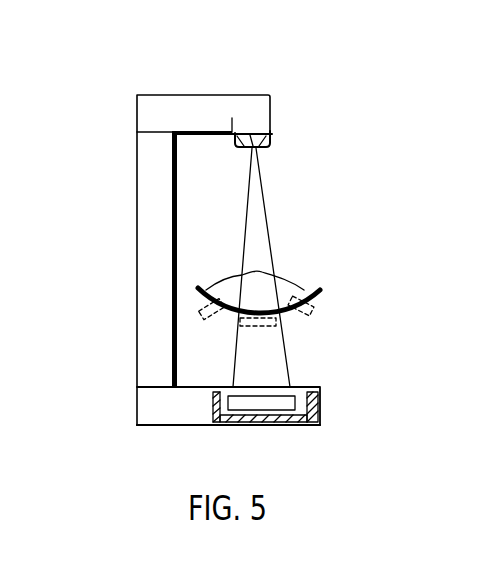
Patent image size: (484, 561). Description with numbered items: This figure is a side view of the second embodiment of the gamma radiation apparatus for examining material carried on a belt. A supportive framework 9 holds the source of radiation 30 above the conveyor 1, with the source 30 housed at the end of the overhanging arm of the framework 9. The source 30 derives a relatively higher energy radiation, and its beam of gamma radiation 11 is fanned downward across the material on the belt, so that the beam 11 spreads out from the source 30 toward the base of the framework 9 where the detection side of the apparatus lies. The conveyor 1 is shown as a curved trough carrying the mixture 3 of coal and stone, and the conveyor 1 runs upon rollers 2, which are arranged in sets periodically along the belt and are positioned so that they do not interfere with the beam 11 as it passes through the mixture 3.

The supportive framework 9 is at (150, 113).
The source of radiation 30 is at (257, 123).
The beam of gamma radiation 11 is at (257, 230).
The conveyor 1 is at (322, 295).
The mixture 3 is at (285, 288).
The rollers 2 is at (210, 316).